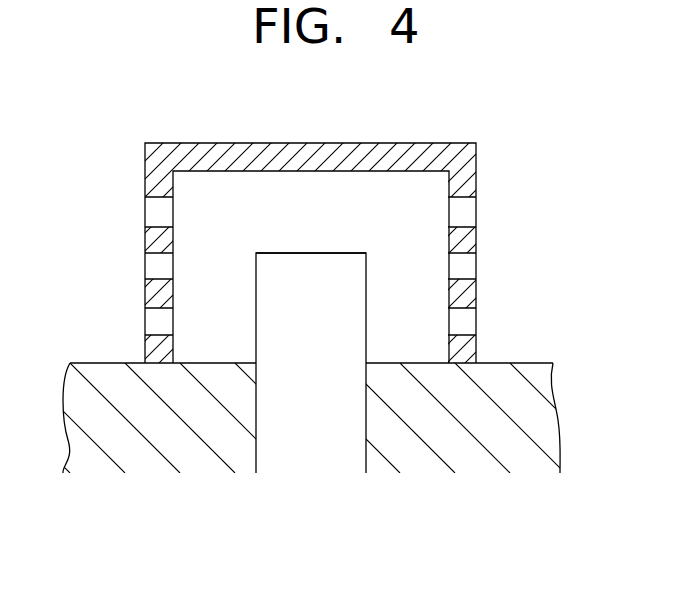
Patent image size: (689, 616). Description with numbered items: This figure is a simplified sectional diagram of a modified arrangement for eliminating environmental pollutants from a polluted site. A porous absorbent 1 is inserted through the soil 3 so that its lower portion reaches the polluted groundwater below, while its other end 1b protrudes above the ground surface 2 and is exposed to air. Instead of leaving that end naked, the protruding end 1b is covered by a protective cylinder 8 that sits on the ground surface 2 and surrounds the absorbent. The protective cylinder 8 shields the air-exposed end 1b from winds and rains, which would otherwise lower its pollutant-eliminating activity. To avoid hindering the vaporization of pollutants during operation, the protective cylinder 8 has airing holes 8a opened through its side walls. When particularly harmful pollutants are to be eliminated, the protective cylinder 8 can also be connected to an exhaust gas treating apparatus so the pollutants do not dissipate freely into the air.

The porous absorbent 1 is at (305, 462).
The end of the porous absorbent 1b is at (354, 253).
The ground surface 2 is at (533, 362).
The soil 3 is at (543, 422).
The protective cylinder 8 is at (381, 152).
The airing holes 8a is at (157, 270).